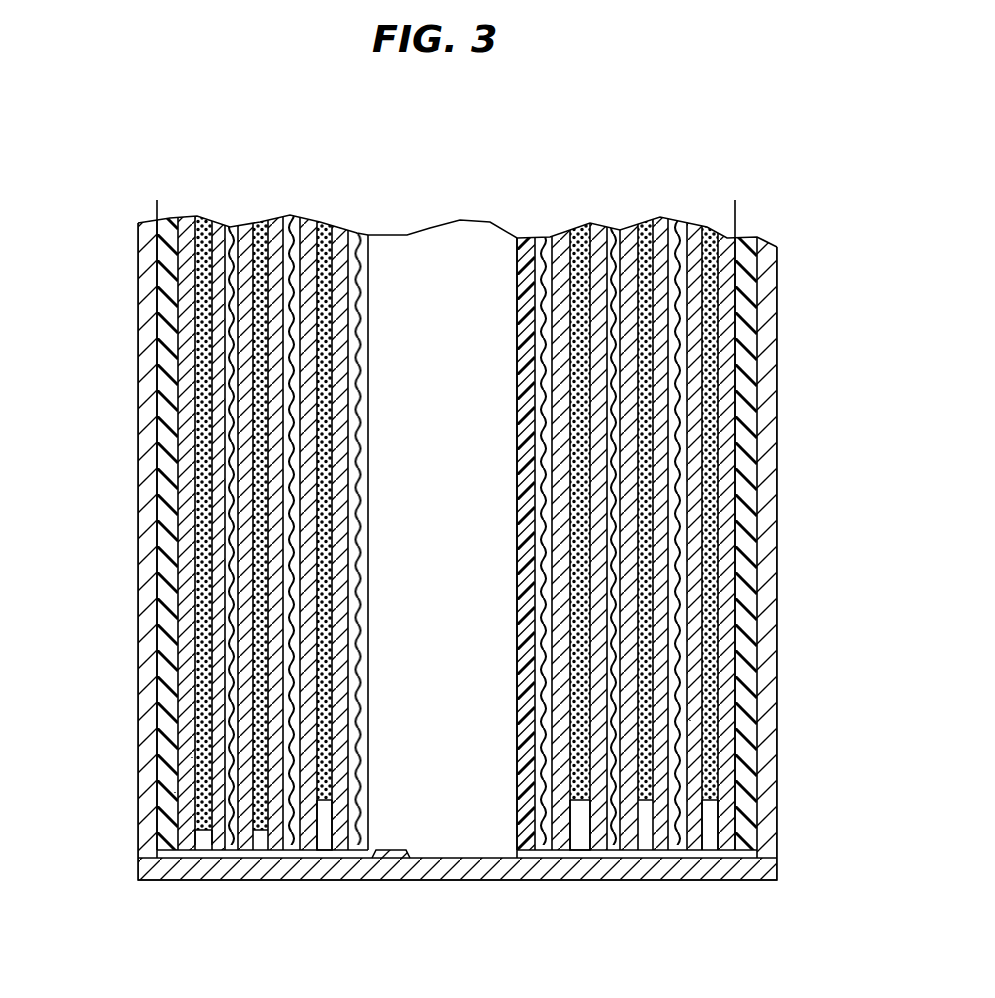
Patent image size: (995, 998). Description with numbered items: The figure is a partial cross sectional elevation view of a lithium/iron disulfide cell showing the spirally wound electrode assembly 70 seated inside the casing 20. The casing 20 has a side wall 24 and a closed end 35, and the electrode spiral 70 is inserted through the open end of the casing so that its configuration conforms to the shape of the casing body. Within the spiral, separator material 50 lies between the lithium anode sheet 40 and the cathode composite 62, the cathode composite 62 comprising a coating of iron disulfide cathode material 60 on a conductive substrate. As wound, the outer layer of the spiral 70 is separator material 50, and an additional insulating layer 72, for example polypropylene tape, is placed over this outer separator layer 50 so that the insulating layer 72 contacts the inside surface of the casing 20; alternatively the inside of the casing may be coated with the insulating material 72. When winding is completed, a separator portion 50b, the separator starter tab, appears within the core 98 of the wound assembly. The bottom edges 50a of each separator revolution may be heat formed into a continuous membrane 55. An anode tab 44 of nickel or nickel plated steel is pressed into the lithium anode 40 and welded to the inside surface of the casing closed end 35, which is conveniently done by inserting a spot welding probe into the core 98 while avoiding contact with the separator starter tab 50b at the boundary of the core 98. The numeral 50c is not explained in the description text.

The casing 20 is at (138, 353).
The casing side wall 24 is at (138, 675).
The closed end of casing 35 is at (643, 882).
The lithium anode 40 is at (190, 215).
The anode tab 44 is at (390, 858).
The separator sheet 50 is at (184, 214).
The bottom edges of separator 50a is at (250, 845).
The separator starter tab 50b is at (525, 237).
The outer separator 50c is at (735, 633).
The continuous membrane 55 is at (325, 850).
The cathode material 60 is at (233, 222).
The cathode composite 62 is at (192, 757).
The spirally wound electrode assembly 70 is at (175, 792).
The insulating layer 72 is at (165, 434).
The core 98 is at (408, 246).